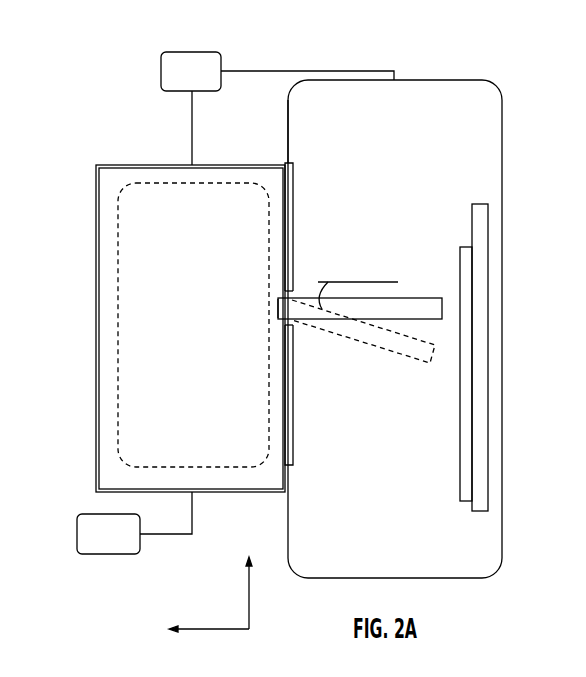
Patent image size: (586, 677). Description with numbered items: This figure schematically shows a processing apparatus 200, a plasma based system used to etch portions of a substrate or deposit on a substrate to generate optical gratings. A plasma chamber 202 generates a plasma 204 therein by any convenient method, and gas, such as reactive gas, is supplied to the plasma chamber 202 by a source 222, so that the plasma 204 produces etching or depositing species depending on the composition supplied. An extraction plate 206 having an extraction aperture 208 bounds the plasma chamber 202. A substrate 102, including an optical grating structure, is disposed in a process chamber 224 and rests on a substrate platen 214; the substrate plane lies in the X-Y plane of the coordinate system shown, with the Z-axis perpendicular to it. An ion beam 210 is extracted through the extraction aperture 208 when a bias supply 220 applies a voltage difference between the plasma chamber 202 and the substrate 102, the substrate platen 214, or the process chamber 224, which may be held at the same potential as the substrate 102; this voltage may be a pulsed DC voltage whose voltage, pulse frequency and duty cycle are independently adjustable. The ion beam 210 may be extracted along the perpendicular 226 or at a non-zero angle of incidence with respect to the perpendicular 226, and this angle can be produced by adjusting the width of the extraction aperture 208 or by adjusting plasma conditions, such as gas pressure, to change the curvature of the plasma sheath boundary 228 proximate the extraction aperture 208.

The processing apparatus 200 is at (69, 69).
The bias supply 220 is at (161, 75).
The source 222 is at (137, 553).
The process chamber 224 is at (450, 82).
The plasma chamber 202 is at (143, 164).
The plasma 204 is at (124, 189).
The extraction plate 206 is at (294, 221).
The extraction aperture 208 is at (299, 291).
The perpendicular 226 is at (385, 281).
The plasma sheath boundary 228 is at (272, 312).
The ion beam 210 is at (308, 328).
The substrate platen 214 is at (472, 204).
The substrate 102 is at (462, 501).